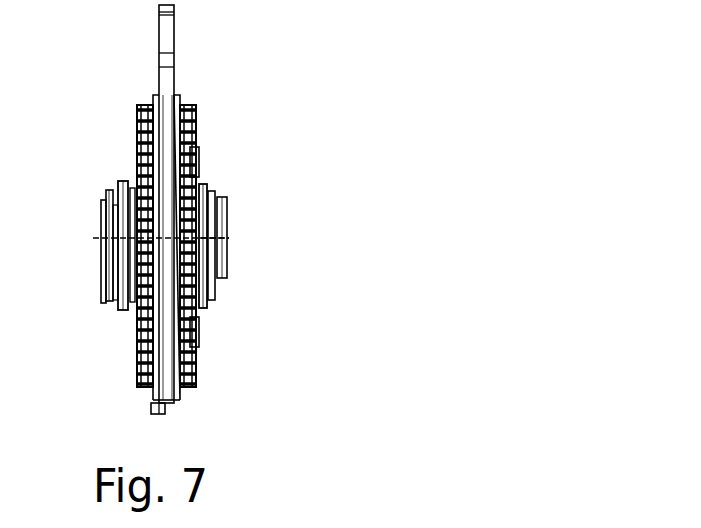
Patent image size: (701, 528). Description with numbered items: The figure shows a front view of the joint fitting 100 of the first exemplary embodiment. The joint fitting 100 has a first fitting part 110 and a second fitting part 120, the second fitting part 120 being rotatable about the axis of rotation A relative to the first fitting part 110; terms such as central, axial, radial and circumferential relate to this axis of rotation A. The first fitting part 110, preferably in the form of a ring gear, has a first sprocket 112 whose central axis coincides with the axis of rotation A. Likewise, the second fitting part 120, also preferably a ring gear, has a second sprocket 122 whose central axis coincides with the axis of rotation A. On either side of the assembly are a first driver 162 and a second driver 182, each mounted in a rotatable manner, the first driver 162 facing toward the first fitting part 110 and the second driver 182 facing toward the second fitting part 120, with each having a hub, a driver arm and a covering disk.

The joint fitting 100 is at (282, 48).
The first fitting part 110 is at (140, 340).
The first sprocket 112 is at (140, 370).
The second fitting part 120 is at (170, 75).
The second sprocket 122 is at (196, 370).
The first driver 162 is at (118, 193).
The second driver 182 is at (208, 190).
The axis of rotation A is at (229, 238).